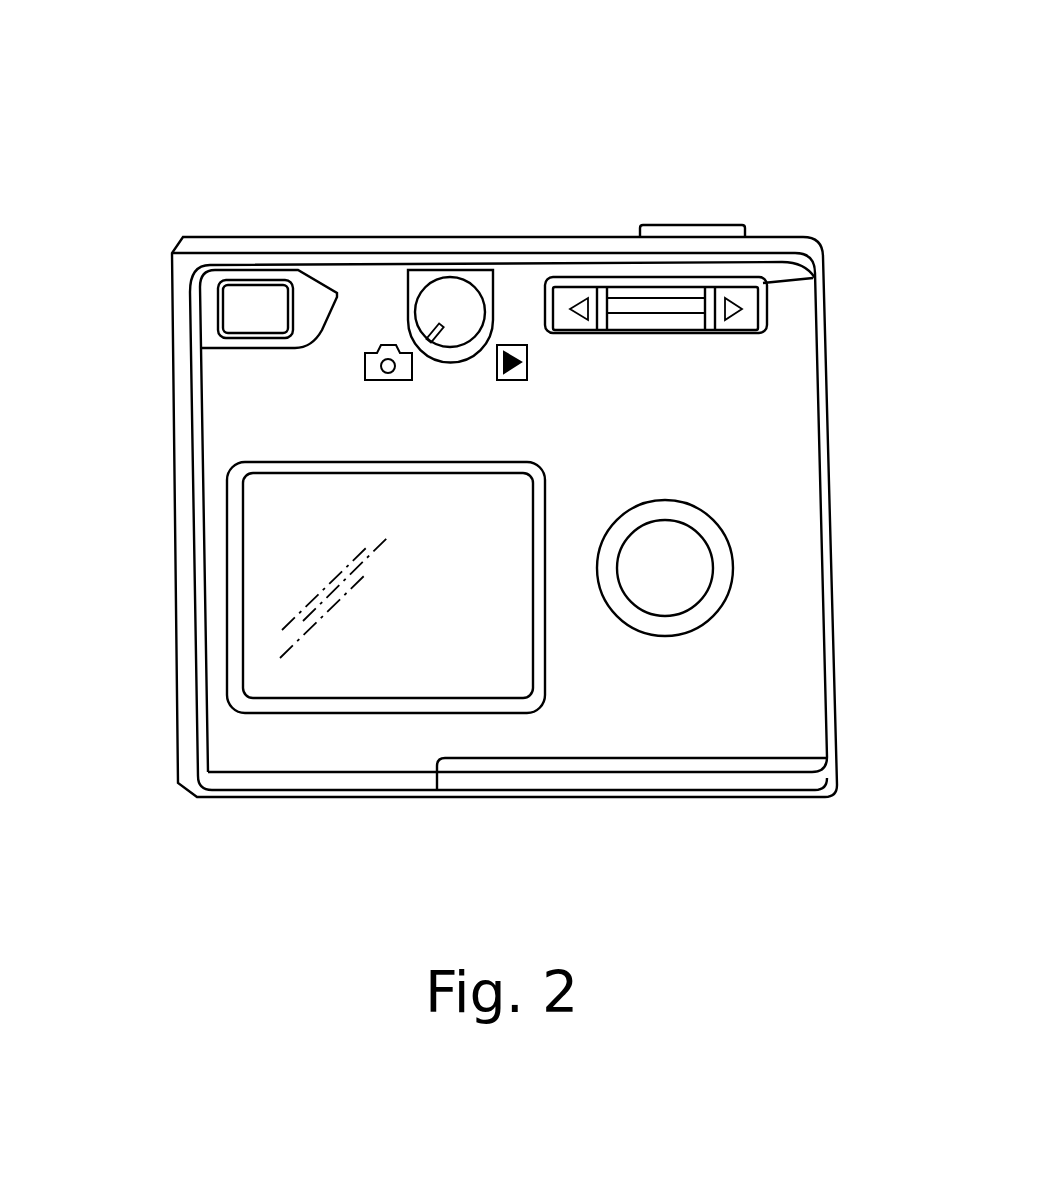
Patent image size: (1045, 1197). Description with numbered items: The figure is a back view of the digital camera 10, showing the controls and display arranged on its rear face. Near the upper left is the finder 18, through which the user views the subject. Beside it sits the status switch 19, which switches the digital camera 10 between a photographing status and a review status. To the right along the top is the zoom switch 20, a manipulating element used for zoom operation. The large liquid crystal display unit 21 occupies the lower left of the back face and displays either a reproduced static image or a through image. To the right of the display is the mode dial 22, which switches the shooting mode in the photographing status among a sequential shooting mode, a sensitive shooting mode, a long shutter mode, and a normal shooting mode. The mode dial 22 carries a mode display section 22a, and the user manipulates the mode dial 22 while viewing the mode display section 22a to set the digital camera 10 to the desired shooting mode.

The digital camera 10 is at (566, 104).
The finder 18 is at (235, 310).
The status switch 19 is at (435, 287).
The zoom switch 20 is at (656, 300).
The liquid crystal display unit 21 is at (282, 565).
The mode dial 22 is at (731, 537).
The mode display section 22a is at (673, 585).